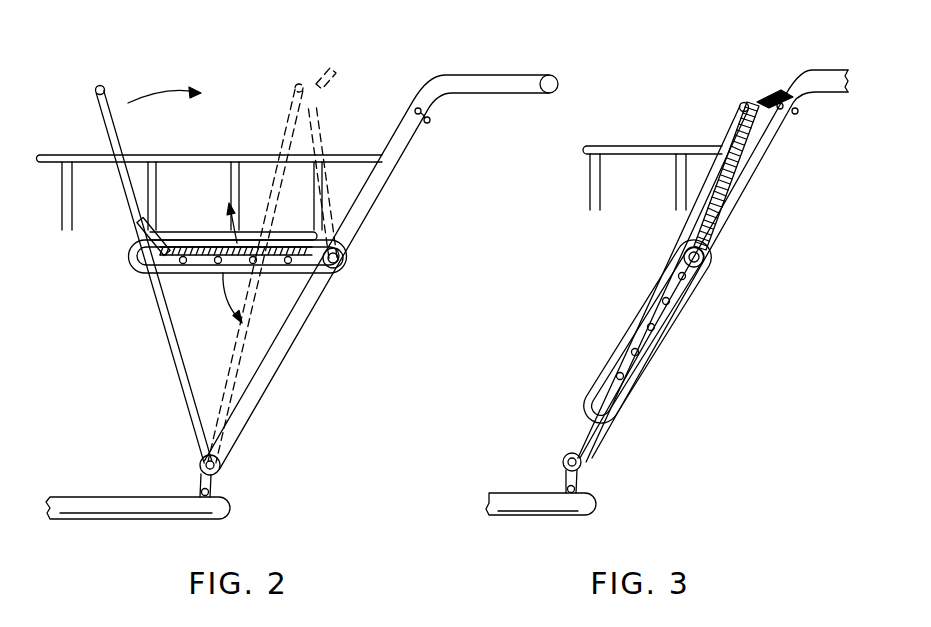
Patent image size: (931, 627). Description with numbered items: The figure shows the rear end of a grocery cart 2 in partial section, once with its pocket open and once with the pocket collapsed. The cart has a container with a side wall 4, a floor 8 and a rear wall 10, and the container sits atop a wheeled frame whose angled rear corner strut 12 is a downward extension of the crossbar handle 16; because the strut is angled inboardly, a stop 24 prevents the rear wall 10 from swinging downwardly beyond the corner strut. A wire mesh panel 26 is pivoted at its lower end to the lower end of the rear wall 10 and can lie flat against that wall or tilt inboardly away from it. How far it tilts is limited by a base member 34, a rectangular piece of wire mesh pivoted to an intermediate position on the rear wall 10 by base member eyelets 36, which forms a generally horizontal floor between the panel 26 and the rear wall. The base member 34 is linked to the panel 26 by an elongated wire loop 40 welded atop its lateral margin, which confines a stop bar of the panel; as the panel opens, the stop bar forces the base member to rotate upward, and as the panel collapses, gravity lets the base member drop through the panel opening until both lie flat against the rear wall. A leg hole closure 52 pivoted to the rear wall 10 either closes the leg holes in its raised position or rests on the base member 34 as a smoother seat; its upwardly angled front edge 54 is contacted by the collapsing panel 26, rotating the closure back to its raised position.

In FIG. 2, the grocery cart 2 is at (278, 95).
In FIG. 2, the side wall 4 is at (198, 156).
In FIG. 3, the side wall 4 is at (632, 146).
In FIG. 2, the floor 8 is at (101, 519).
In FIG. 3, the floor 8 is at (541, 504).
In FIG. 2, the rear wall 10 is at (390, 177).
In FIG. 3, the rear wall 10 is at (714, 264).
In FIG. 2, the rear corner strut 12 is at (401, 127).
In FIG. 2, the crossbar handle 16 is at (506, 76).
In FIG. 3, the crossbar handle 16 is at (819, 72).
In FIG. 2, the stop 24 is at (222, 497).
In FIG. 3, the stop 24 is at (585, 488).
In FIG. 2, the wire mesh panel 26 is at (101, 88).
In FIG. 3, the wire mesh panel 26 is at (738, 108).
In FIG. 2, the base member 34 is at (183, 273).
In FIG. 3, the base member 34 is at (660, 336).
In FIG. 2, the base member eyelet 36 is at (342, 258).
In FIG. 3, the base member eyelet 36 is at (706, 259).
In FIG. 2, the elongated wire loop 40 is at (283, 231).
In FIG. 2, the leg hole closure 52 is at (180, 247).
In FIG. 3, the leg hole closure 52 is at (738, 150).
In FIG. 2, the upwardly angled front edge 54 is at (158, 232).
In FIG. 3, the upwardly angled front edge 54 is at (794, 106).